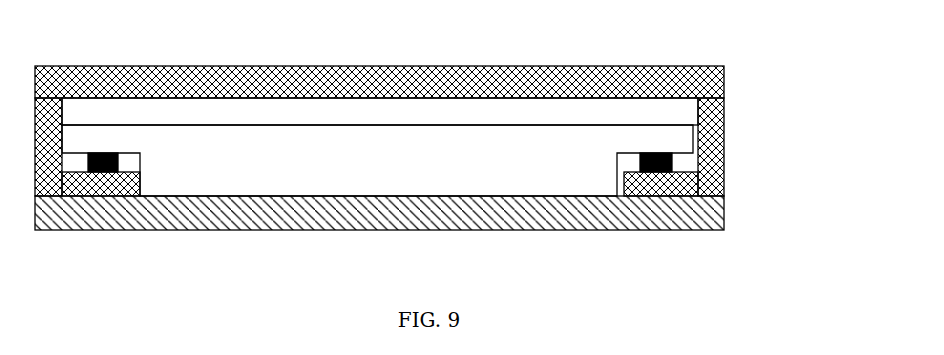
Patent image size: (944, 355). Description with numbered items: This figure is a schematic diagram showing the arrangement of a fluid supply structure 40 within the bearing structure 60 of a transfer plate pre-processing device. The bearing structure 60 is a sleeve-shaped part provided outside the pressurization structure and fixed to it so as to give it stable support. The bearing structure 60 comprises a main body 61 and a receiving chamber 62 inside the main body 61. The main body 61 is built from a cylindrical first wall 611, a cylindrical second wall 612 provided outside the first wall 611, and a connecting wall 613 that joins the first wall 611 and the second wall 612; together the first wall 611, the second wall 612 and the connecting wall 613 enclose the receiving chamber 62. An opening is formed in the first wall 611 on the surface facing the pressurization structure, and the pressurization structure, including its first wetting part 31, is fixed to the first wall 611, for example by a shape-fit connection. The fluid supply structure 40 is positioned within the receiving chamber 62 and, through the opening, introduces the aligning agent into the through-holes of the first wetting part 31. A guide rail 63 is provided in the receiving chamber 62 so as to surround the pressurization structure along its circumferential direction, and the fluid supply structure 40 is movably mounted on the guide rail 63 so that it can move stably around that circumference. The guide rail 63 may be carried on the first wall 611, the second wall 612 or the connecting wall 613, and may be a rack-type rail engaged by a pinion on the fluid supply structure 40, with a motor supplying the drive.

The first wetting part 31 is at (545, 222).
The fluid supply structure 40 is at (413, 152).
The bearing structure 60 is at (448, 112).
The main body 61 is at (431, 131).
The first wall 611 is at (657, 192).
The second wall 612 is at (640, 88).
The connecting wall 613 is at (700, 136).
The receiving chamber 62 is at (562, 108).
The guide rail 63 is at (120, 154).